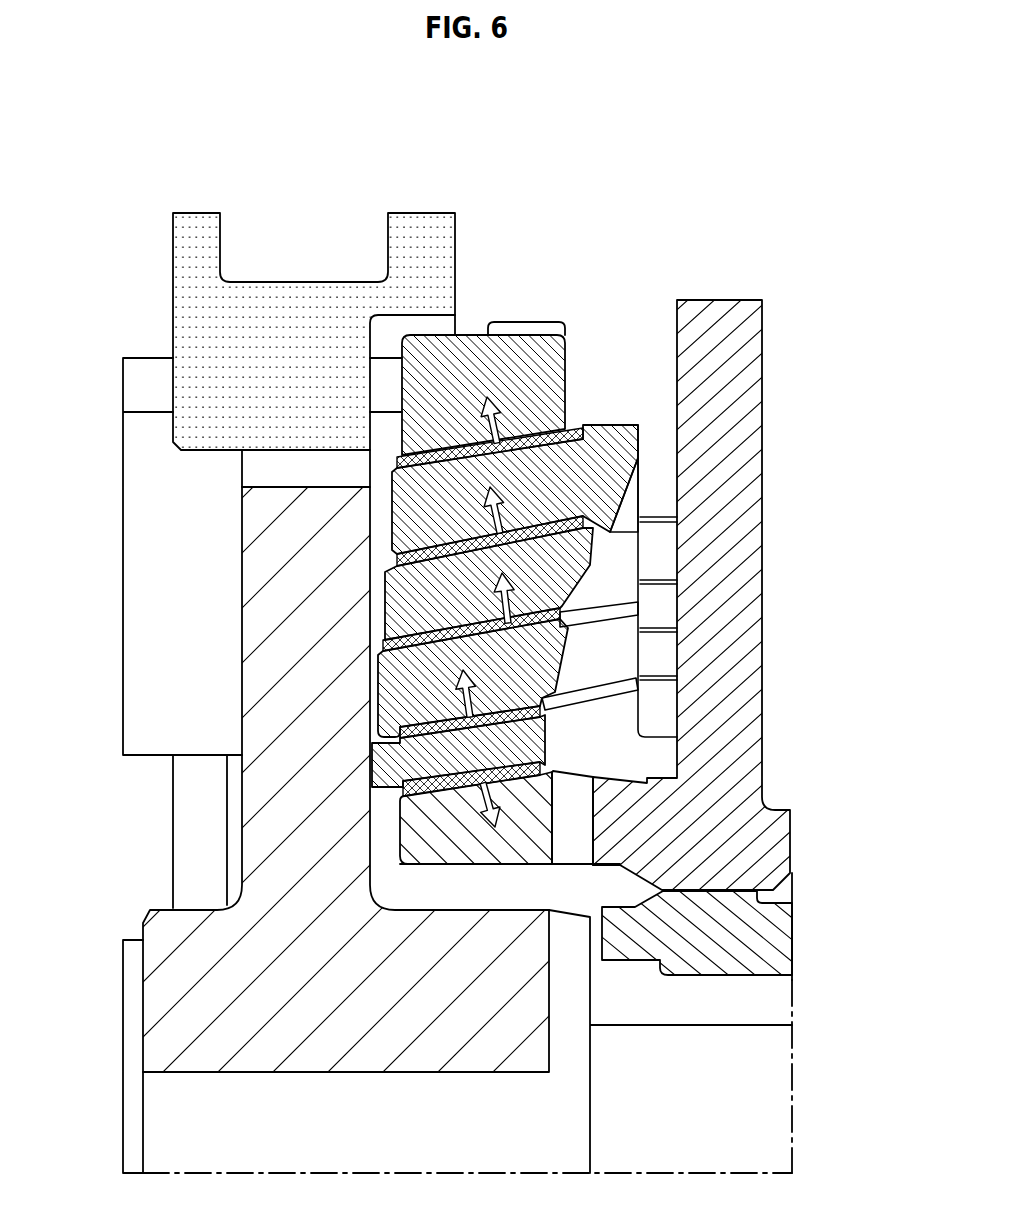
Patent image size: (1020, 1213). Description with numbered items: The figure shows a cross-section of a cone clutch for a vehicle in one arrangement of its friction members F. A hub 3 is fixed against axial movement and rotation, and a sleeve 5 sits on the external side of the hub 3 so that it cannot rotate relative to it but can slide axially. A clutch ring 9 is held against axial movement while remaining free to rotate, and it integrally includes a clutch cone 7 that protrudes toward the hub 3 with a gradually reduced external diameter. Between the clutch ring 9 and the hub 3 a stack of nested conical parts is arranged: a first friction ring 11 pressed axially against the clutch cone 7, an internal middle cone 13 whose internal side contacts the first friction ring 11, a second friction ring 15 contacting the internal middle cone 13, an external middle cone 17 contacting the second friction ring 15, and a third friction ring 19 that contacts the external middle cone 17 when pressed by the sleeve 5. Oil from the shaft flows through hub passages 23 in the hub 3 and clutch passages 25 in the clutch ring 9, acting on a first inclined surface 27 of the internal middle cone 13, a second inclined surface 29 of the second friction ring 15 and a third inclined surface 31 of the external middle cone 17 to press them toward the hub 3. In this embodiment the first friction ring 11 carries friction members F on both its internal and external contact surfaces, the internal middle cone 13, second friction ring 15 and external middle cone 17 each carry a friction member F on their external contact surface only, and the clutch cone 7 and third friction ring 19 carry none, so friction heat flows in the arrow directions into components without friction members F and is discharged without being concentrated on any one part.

The hub 3 is at (197, 980).
The sleeve 5 is at (300, 293).
The clutch cone 7 is at (410, 845).
The clutch ring 9 is at (730, 718).
The first friction ring 11 is at (403, 769).
The internal middle cone 13 is at (415, 682).
The second friction ring 15 is at (413, 597).
The external middle cone 17 is at (413, 515).
The third friction ring 19 is at (413, 386).
The hub passages 23 is at (567, 1008).
The clutch passages 25 is at (573, 827).
The first inclined surface 27 is at (560, 657).
The second inclined surface 29 is at (600, 567).
The third inclined surface 31 is at (627, 480).
The friction member F is at (585, 427).